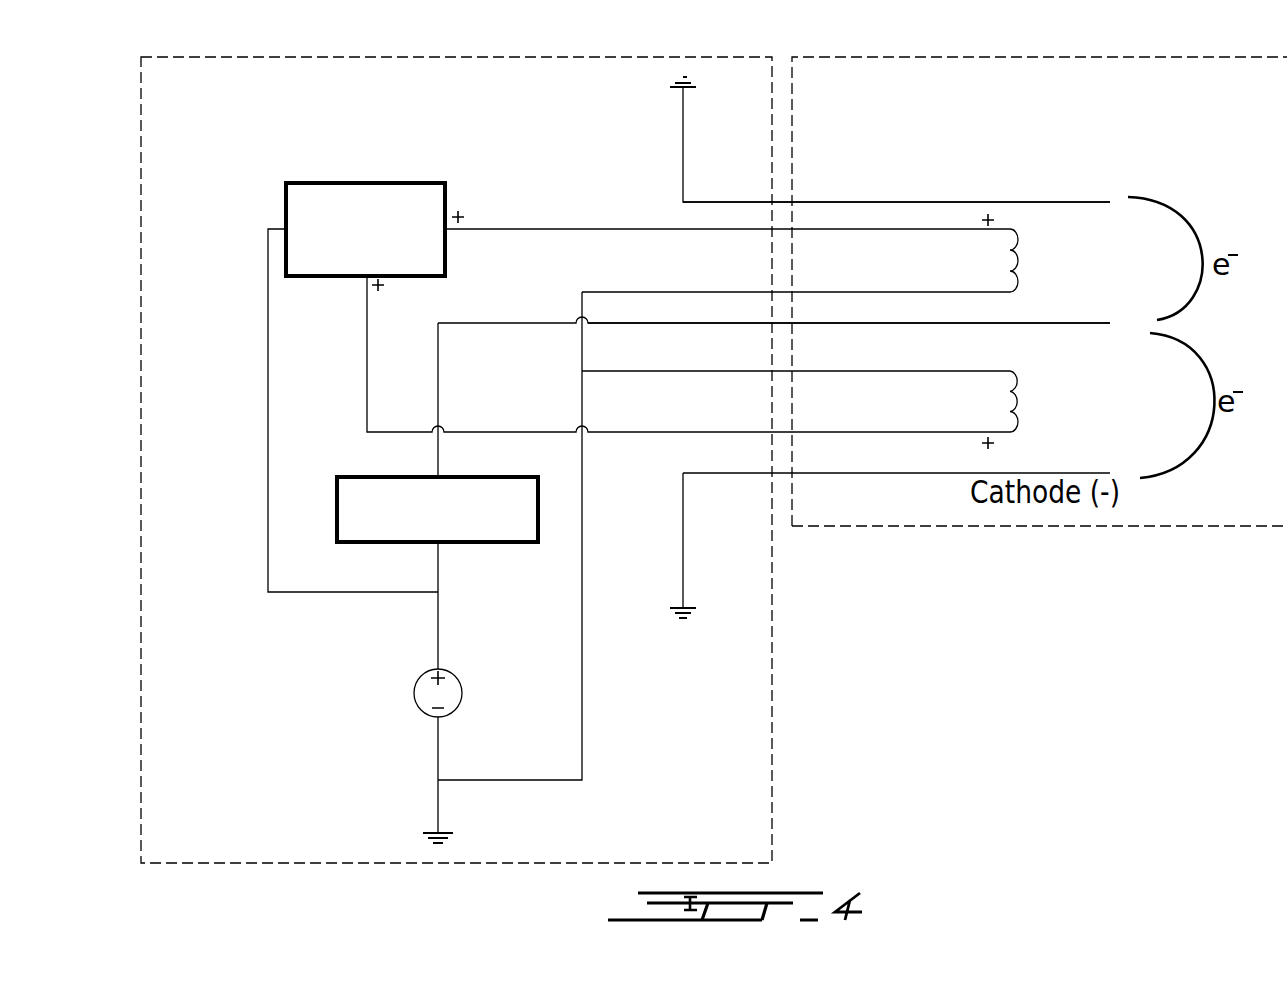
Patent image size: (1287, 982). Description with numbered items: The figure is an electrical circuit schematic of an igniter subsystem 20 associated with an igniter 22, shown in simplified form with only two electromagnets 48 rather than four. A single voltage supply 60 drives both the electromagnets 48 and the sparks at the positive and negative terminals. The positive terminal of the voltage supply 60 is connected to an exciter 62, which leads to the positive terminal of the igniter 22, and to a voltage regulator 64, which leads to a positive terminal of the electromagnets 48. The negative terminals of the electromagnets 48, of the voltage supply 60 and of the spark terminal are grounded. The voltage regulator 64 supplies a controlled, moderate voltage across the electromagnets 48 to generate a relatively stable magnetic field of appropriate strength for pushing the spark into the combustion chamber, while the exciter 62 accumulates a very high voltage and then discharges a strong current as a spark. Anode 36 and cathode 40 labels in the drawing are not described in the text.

The igniter subsystem 20 is at (505, 57).
The igniter 22 is at (1190, 57).
The anode 36 is at (1087, 322).
The cathode 40 is at (1077, 200).
The electromagnets 48 is at (1017, 262).
The voltage supply 60 is at (462, 693).
The exciter 62 is at (503, 543).
The voltage regulator 64 is at (367, 183).